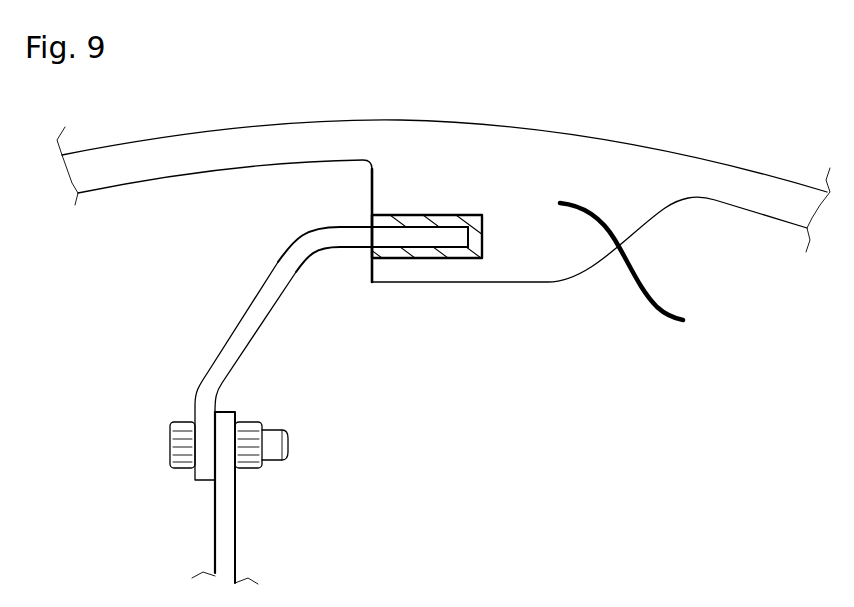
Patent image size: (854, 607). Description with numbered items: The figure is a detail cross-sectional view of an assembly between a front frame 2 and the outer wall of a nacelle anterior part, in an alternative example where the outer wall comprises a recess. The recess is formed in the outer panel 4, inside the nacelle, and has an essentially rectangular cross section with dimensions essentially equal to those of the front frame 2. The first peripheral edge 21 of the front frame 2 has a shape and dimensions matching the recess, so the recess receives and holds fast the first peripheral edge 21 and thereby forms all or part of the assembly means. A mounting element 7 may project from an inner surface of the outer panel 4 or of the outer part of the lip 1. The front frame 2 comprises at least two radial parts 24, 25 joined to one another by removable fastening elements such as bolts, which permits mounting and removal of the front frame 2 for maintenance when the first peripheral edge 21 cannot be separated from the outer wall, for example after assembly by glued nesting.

The lip 1 is at (160, 215).
The front frame 2 is at (270, 353).
The outer panel 4 is at (580, 133).
The mounting element 7 is at (636, 276).
The first peripheral edge 21 is at (400, 233).
The radial part 24 is at (210, 378).
The radial part 25 is at (224, 530).